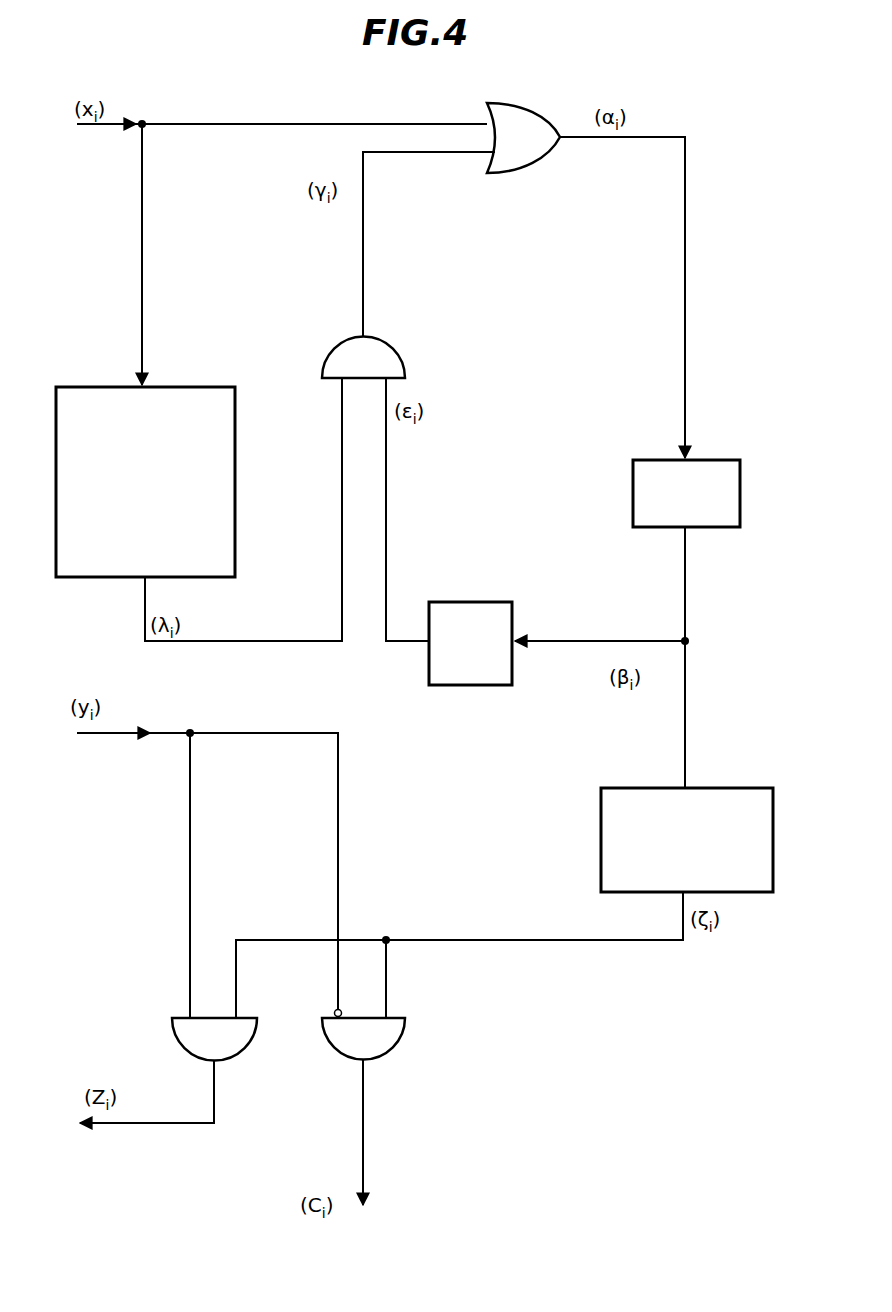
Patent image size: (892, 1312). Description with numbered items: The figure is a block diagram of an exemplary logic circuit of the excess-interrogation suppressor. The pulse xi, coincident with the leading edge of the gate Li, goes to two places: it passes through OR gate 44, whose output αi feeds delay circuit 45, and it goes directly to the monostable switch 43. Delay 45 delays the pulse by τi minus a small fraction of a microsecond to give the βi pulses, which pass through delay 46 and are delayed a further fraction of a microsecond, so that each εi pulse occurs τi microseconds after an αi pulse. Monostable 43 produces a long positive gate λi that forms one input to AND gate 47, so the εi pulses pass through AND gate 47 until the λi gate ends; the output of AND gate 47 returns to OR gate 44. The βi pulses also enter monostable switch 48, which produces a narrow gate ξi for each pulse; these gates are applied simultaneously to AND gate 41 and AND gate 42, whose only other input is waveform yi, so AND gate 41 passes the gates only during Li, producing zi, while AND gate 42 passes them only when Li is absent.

The AND gate 41 is at (236, 1057).
The AND gate 42 is at (391, 1051).
The monostable switch 43 is at (200, 508).
The OR gate 44 is at (529, 109).
The delay circuit 45 is at (642, 508).
The delay 46 is at (456, 681).
The AND gate 47 is at (401, 353).
The monostable switch 48 is at (607, 865).